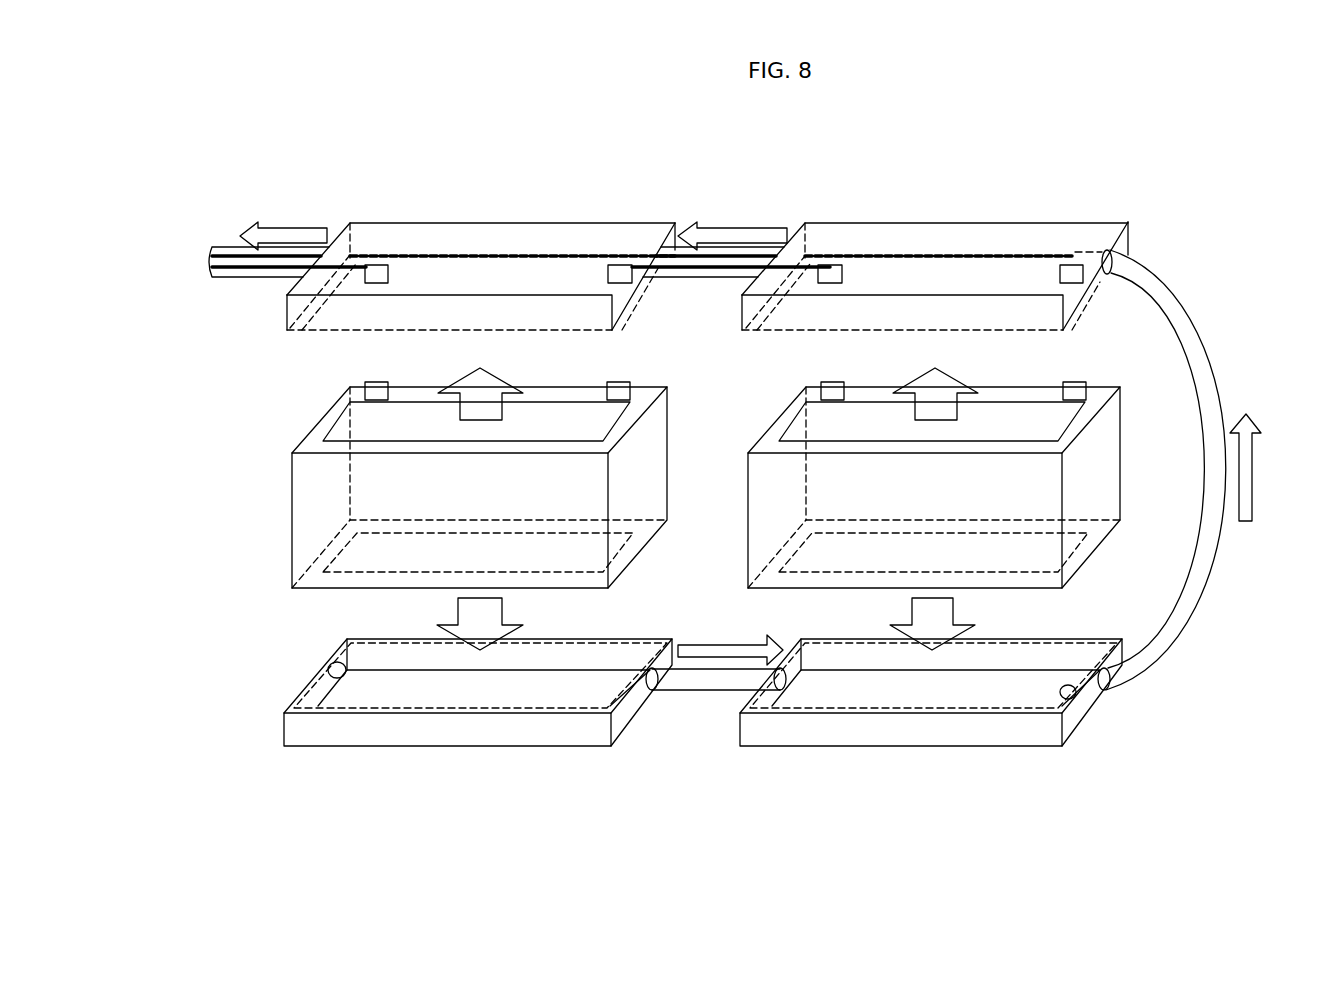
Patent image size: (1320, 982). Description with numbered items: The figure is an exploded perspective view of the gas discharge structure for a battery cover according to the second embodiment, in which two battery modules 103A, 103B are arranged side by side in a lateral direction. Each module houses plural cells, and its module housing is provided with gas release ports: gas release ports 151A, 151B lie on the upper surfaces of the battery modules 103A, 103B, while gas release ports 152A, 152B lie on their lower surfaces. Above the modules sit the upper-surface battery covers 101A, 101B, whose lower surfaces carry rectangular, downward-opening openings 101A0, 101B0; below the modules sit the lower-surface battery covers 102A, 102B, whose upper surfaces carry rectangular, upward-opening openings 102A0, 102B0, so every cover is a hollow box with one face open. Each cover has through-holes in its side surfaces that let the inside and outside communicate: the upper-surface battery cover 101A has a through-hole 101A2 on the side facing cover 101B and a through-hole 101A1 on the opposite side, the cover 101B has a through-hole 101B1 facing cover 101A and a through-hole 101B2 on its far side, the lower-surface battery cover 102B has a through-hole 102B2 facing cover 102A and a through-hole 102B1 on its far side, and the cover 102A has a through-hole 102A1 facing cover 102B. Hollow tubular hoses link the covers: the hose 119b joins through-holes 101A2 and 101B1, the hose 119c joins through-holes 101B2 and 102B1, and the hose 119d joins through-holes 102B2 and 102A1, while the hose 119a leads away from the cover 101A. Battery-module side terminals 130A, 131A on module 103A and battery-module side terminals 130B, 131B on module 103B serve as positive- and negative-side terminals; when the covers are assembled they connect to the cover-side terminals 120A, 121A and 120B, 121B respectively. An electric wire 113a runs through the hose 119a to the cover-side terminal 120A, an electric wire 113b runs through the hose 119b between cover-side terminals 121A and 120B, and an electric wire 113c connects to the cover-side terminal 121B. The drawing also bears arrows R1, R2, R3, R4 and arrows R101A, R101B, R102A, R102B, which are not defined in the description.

The upper-surface battery cover 101A is at (517, 230).
The opening 101A0 is at (318, 305).
The through-hole 101A1 is at (343, 227).
The through-hole 101A2 is at (650, 240).
The upper-surface battery cover 101B is at (930, 230).
The opening 101B0 is at (1003, 317).
The through-hole 101B1 is at (803, 227).
The through-hole 101B2 is at (1110, 262).
The lower-surface battery cover 102A is at (520, 735).
The opening 102A0 is at (333, 658).
The through-hole 102A1 is at (657, 690).
The lower-surface battery cover 102B is at (972, 735).
The opening 102B0 is at (1073, 690).
The through-hole 102B1 is at (1102, 671).
The through-hole 102B2 is at (785, 685).
The battery module 103A is at (595, 510).
The battery module 103B is at (1046, 510).
The electric wire 113a is at (255, 272).
The electric wire 113b is at (697, 270).
The electric wire 113c is at (965, 253).
The hose 119a is at (230, 250).
The hose 119b is at (733, 272).
The hose 119c is at (1198, 584).
The hose 119d is at (715, 685).
The cover-side terminal 120A is at (380, 272).
The cover-side terminal 121A is at (617, 265).
The cover-side terminal 120B is at (835, 272).
The cover-side terminal 121B is at (1080, 263).
The battery-module side terminal 130A is at (375, 382).
The battery-module side terminal 131A is at (620, 382).
The battery-module side terminal 130B is at (830, 382).
The battery-module side terminal 131B is at (1075, 382).
The gas release port 151A is at (603, 420).
The gas release port 151B is at (1055, 420).
The gas release port 152A is at (598, 555).
The gas release port 152B is at (1050, 553).
The insertion direction arrow R1 is at (283, 225).
The insertion direction arrow R2 is at (732, 225).
The rotation direction arrow R3 is at (1262, 467).
The insertion direction arrow R4 is at (730, 641).
The movement direction arrow R101A is at (508, 388).
The movement direction arrow R101B is at (963, 388).
The movement direction arrow R102A is at (518, 624).
The movement direction arrow R102B is at (972, 624).